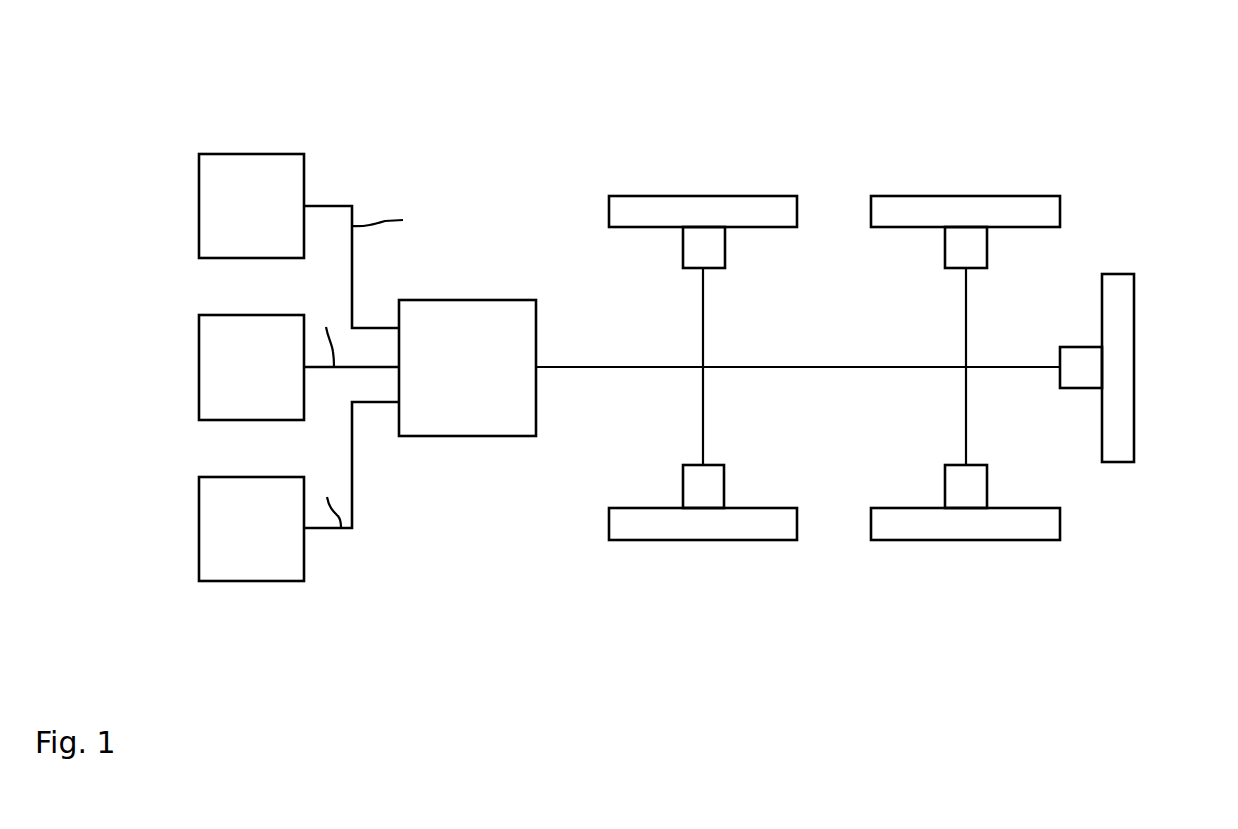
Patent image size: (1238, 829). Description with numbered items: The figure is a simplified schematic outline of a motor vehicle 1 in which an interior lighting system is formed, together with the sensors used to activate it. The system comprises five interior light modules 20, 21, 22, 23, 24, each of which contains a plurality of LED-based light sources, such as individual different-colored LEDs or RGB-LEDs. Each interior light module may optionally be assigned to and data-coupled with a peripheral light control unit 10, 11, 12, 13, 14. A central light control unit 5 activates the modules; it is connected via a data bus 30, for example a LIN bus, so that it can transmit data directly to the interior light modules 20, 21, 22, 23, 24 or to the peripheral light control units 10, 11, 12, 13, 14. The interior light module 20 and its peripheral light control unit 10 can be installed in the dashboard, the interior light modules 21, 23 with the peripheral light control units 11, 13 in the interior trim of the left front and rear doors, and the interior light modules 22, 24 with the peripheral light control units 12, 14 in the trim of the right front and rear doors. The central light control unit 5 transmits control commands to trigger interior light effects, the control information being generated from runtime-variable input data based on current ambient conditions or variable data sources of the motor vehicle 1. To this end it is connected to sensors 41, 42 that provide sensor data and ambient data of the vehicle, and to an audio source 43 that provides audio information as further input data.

The motor vehicle 1 is at (1073, 119).
The central light control unit 5 is at (488, 300).
The peripheral light control unit 10 is at (1080, 346).
The peripheral light control unit 11 is at (945, 247).
The peripheral light control unit 12 is at (945, 487).
The peripheral light control unit 13 is at (725, 247).
The peripheral light control unit 14 is at (724, 487).
The interior light module 20 is at (1113, 363).
The interior light module 21 is at (987, 208).
The interior light module 22 is at (950, 529).
The interior light module 23 is at (737, 207).
The interior light module 24 is at (692, 528).
The data bus 30 is at (591, 369).
The sensor 41 is at (225, 154).
The sensor 42 is at (198, 367).
The audio source 43 is at (198, 528).